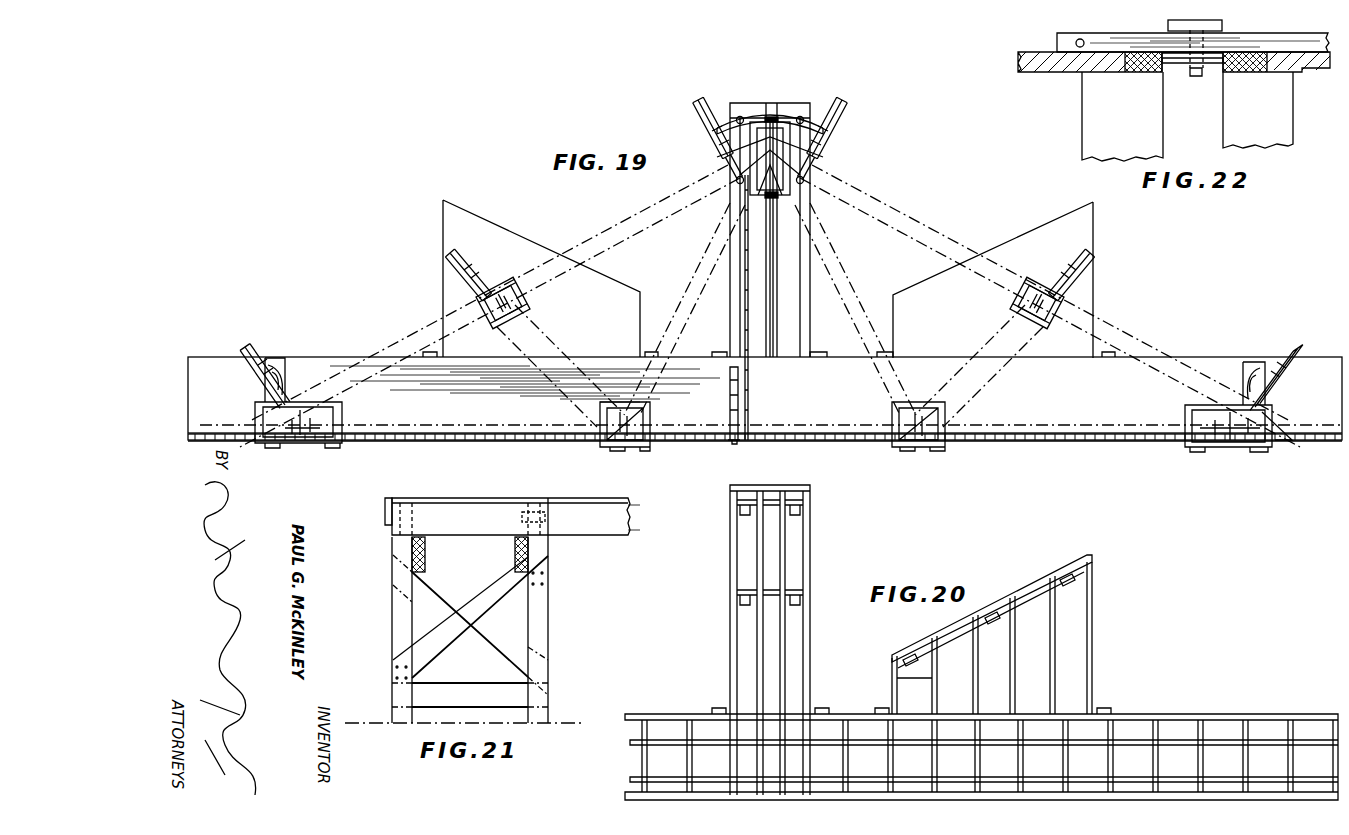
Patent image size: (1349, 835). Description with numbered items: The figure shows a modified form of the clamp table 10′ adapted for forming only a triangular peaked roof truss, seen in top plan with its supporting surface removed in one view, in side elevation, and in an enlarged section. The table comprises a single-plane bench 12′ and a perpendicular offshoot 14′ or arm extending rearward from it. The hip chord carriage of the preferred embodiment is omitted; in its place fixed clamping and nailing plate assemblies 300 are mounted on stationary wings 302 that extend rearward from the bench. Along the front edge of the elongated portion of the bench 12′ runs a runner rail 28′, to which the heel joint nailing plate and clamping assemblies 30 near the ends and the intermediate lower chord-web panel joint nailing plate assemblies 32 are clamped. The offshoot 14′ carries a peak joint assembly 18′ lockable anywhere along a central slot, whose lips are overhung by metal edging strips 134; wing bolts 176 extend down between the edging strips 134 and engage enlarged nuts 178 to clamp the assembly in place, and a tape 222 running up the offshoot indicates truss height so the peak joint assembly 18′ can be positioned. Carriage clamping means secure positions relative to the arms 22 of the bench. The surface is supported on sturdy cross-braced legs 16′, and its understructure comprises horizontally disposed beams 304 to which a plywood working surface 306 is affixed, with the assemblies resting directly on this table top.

In FIG. 19, the clamp table 10′ is at (440, 233).
In FIG. 19, the single-plane bench 12′ is at (1091, 403).
In FIG. 21, the single-plane bench 12′ is at (469, 522).
In FIG. 20, the single-plane bench 12′ is at (688, 712).
In FIG. 19, the perpendicular offshoot 14′ is at (803, 324).
In FIG. 22, the perpendicular offshoot 14′ is at (1046, 58).
In FIG. 20, the perpendicular offshoot 14′ is at (729, 662).
In FIG. 21, the legs 16′ is at (398, 616).
In FIG. 20, the legs 16′ is at (1330, 786).
In FIG. 19, the peak joint assembly 18′ is at (784, 116).
In FIG. 22, the peak joint assembly 18′ is at (1060, 42).
In FIG. 19, the arms 22 is at (795, 205).
In FIG. 19, the runner rail 28′ is at (1022, 444).
In FIG. 21, the runner rail 28′ is at (384, 514).
In FIG. 19, the heel joint nailing plate and clamping assemblies 30 is at (344, 420).
In FIG. 19, the lower chord-web panel joint nailing plate assemblies 32 is at (652, 418).
In FIG. 19, the metal edging strips 134 is at (770, 298).
In FIG. 22, the metal edging strips 134 is at (1175, 62).
In FIG. 22, the wing bolts 176 is at (1168, 25).
In FIG. 22, the enlarged nuts 178 is at (1210, 60).
In FIG. 19, the tape 222 is at (742, 320).
In FIG. 22, the tape 222 is at (1084, 56).
In FIG. 19, the fixed clamping and nailing plate assemblies 300 is at (527, 308).
In FIG. 19, the stationary wings 302 is at (599, 329).
In FIG. 22, the horizontally disposed beams 304 is at (1150, 72).
In FIG. 21, the horizontally disposed beams 304 is at (598, 525).
In FIG. 20, the horizontally disposed beams 304 is at (757, 553).
In FIG. 19, the working surface 306 is at (819, 400).
In FIG. 21, the working surface 306 is at (576, 498).